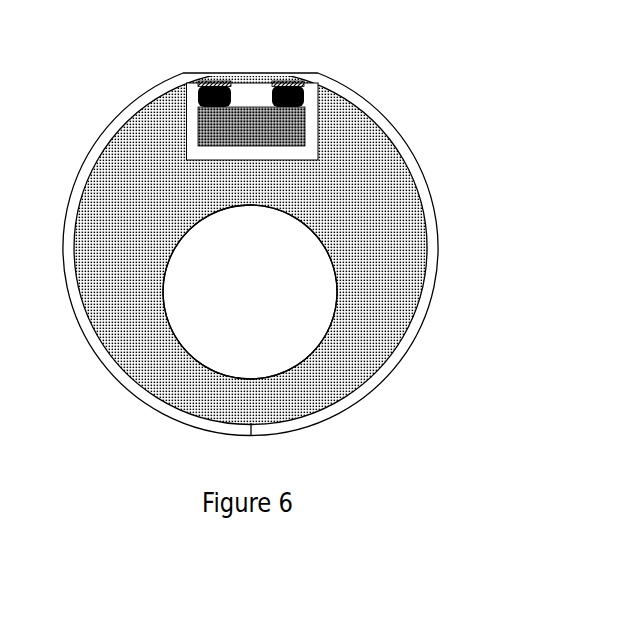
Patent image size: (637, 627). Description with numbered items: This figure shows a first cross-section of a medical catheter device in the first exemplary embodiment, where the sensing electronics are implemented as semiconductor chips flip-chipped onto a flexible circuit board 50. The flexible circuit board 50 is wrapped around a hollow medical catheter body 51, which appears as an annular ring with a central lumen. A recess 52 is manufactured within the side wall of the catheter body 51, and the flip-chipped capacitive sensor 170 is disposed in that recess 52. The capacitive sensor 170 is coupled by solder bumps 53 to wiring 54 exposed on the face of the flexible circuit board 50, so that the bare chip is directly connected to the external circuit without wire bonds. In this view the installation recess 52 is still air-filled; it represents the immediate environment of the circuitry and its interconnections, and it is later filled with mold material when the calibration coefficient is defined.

The flexible circuit board 50 is at (397, 140).
The medical catheter body 51 is at (410, 258).
The recess 52 is at (312, 107).
The solder bumps 53 is at (197, 90).
The wiring 54 is at (217, 82).
The capacitive sensor 170 is at (220, 132).